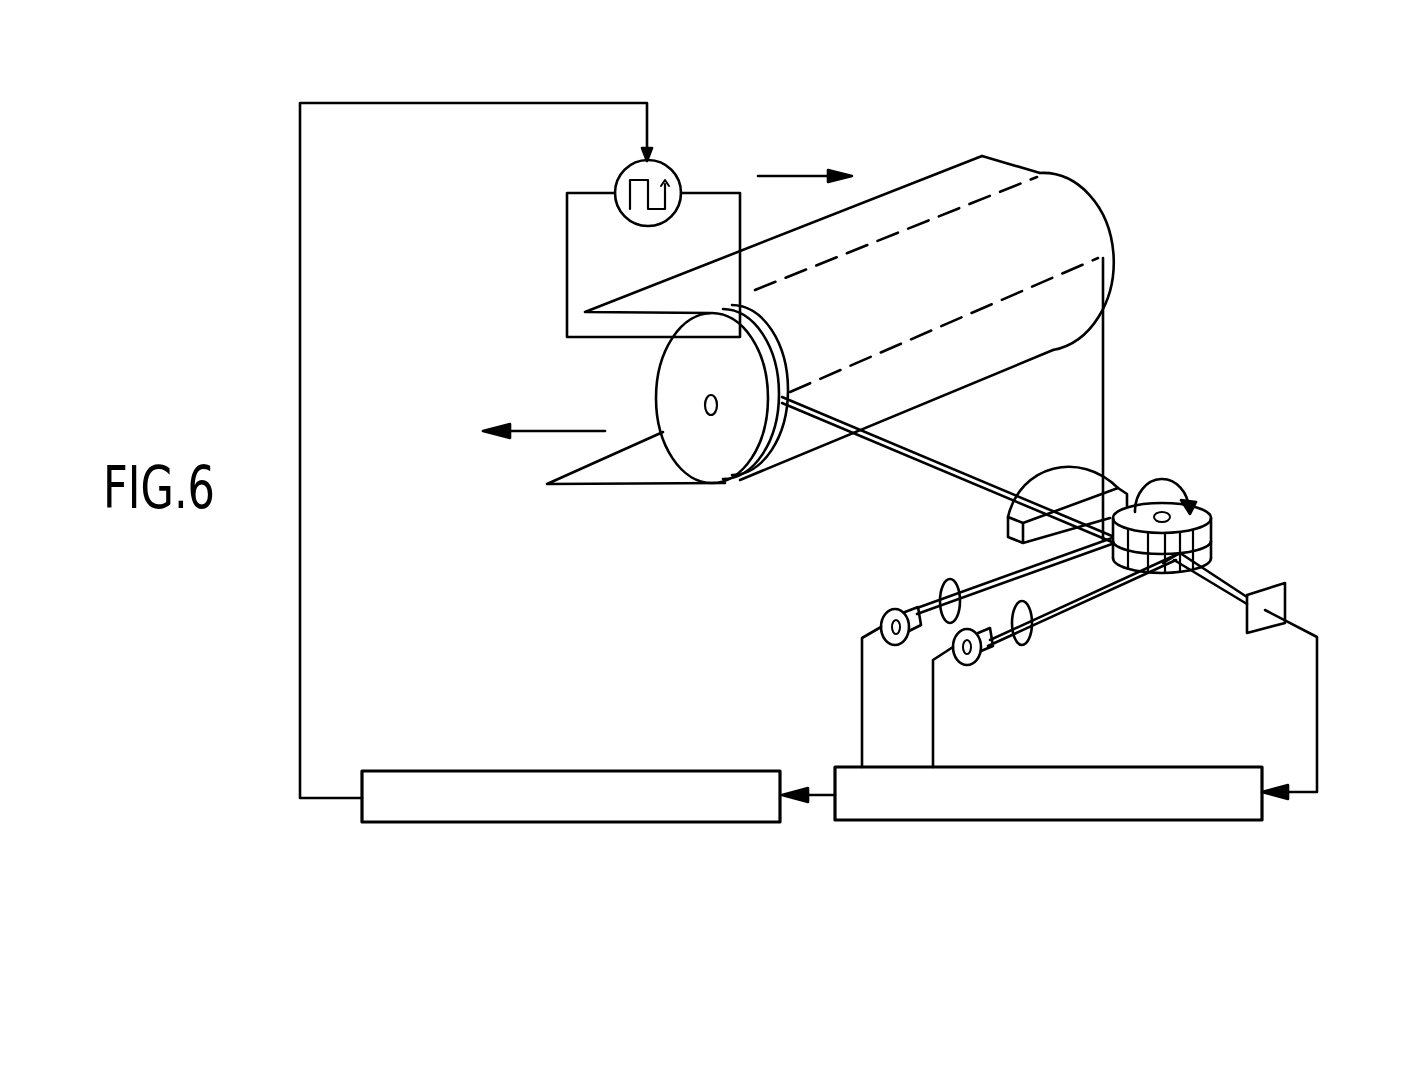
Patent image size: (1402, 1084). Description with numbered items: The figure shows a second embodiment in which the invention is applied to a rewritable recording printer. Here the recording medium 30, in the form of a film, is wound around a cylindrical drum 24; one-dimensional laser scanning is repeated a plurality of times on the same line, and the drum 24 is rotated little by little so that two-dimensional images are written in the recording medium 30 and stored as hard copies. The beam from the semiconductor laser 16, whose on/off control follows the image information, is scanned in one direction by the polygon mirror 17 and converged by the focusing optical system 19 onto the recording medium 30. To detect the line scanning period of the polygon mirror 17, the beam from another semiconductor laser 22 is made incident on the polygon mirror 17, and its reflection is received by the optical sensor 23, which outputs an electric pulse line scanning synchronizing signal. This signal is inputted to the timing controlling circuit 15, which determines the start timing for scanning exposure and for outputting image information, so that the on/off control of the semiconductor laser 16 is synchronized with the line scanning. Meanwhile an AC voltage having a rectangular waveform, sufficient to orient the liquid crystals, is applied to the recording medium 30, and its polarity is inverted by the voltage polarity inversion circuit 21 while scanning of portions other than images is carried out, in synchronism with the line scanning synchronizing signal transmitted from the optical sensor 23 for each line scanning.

The recording medium 30 is at (963, 172).
The cylindrical drum 24 is at (728, 474).
The focusing optical system 19 is at (1086, 486).
The polygon mirror 17 is at (1208, 505).
The semiconductor laser 16 is at (911, 612).
The semiconductor laser 22 is at (984, 642).
The optical sensor 23 is at (1284, 592).
The voltage polarity inversion circuit 21 is at (571, 796).
The timing controlling circuit 15 is at (1022, 793).